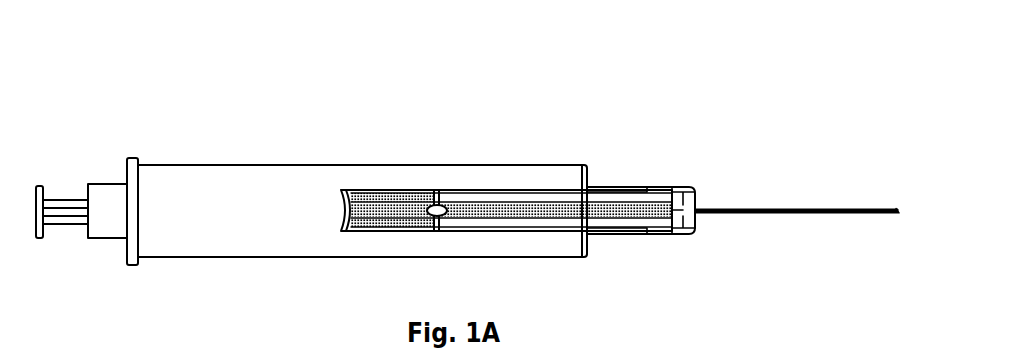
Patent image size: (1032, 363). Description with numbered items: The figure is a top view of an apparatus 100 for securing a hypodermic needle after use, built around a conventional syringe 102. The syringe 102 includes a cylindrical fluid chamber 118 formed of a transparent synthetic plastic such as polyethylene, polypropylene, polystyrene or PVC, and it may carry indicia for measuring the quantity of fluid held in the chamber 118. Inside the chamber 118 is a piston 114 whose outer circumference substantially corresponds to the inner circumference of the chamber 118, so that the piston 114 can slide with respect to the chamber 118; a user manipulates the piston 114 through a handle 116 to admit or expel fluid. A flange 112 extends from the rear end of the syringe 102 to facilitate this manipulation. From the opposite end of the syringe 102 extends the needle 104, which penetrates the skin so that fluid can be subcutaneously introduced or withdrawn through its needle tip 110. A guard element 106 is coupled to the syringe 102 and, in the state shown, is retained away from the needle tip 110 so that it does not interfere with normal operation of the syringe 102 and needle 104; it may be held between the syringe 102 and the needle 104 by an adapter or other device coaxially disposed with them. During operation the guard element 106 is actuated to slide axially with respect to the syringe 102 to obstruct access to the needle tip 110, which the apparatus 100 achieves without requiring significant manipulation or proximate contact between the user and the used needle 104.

The apparatus 100 is at (224, 79).
The syringe 102 is at (382, 165).
The hypodermic needle 104 is at (797, 208).
The guard element 106 is at (626, 170).
The needle tip 110 is at (898, 208).
The flange 112 is at (134, 158).
The piston 114 is at (108, 192).
The handle 116 is at (40, 186).
The cylindrical fluid chamber 118 is at (250, 178).